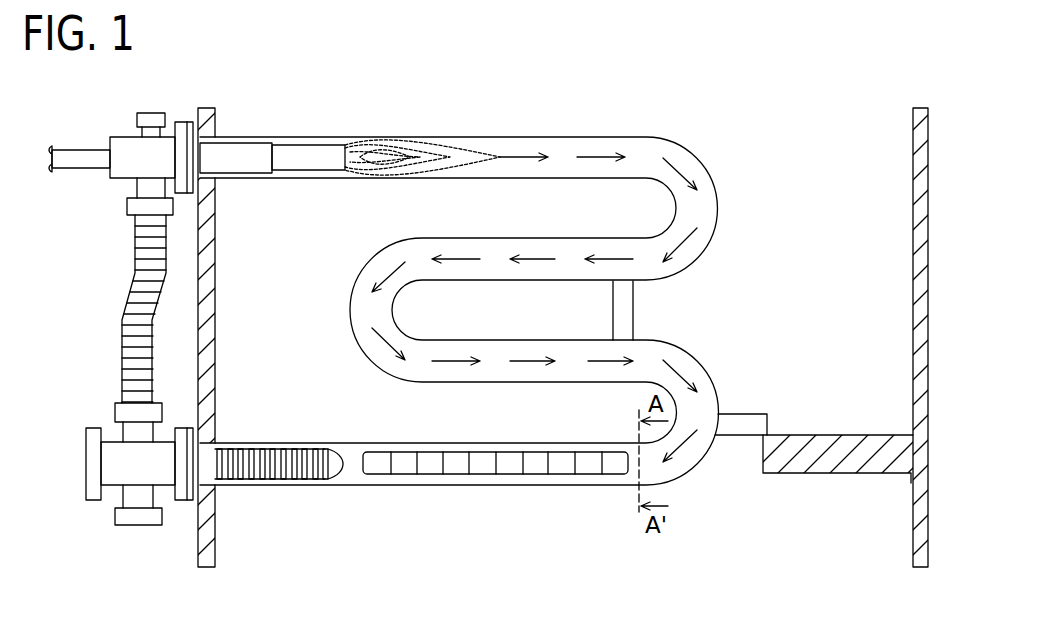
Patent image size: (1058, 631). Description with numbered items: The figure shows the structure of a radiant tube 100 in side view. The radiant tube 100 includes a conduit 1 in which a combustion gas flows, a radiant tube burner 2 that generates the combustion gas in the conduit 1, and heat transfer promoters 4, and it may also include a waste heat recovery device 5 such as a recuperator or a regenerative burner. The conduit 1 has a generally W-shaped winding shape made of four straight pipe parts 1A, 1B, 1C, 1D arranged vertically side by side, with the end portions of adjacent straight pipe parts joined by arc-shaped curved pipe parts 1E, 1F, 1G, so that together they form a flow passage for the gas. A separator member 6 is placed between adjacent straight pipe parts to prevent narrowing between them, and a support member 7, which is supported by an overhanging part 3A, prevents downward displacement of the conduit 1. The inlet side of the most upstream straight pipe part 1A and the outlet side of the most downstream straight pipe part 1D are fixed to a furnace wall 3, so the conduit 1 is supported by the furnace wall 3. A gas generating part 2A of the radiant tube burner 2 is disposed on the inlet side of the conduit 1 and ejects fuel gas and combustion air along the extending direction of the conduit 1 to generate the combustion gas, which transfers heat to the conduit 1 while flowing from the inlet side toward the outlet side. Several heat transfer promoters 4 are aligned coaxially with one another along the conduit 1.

The radiant tube 100 is at (459, 248).
The conduit 1 is at (684, 122).
The straight pipe part 1A is at (612, 137).
The straight pipe part 1B is at (612, 238).
The straight pipe part 1C is at (530, 340).
The straight pipe part 1D is at (495, 432).
The curved pipe part 1E is at (708, 153).
The curved pipe part 1F is at (352, 300).
The curved pipe part 1G is at (700, 358).
The radiant tube burner 2 is at (252, 140).
The gas generating part 2A is at (310, 148).
The furnace wall 3 is at (215, 283).
The overhanging part 3A is at (838, 455).
The heat transfer promoter 4 is at (428, 465).
The waste heat recovery device 5 is at (272, 455).
The separator member 6 is at (633, 300).
The support member 7 is at (735, 414).